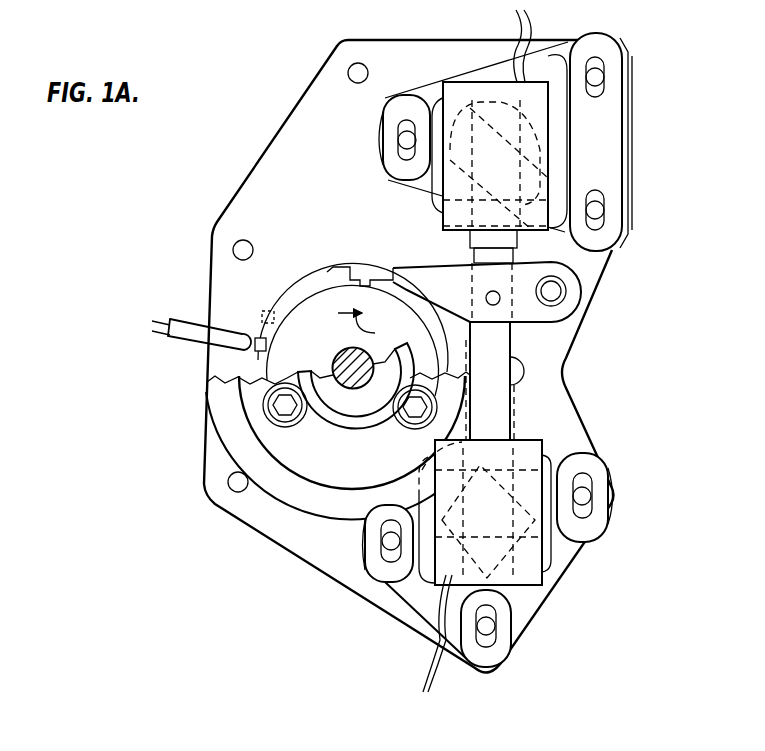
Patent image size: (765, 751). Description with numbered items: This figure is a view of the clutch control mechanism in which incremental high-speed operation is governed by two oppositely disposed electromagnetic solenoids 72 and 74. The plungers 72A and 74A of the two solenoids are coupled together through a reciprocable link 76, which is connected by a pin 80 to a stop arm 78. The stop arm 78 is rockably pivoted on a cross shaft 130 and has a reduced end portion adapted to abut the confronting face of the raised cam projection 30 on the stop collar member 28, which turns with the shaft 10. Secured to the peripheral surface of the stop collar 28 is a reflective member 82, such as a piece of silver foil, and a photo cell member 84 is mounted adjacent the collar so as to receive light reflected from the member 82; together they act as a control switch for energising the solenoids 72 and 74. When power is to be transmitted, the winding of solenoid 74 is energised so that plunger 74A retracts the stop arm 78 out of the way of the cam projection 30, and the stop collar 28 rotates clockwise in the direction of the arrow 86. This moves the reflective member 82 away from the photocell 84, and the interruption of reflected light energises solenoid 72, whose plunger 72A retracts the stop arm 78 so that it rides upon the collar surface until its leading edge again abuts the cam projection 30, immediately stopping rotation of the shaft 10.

The shaft 10 is at (348, 352).
The stop collar member 28 is at (309, 290).
The cam projection 30 is at (341, 278).
The electromagnetic solenoid 72 is at (532, 573).
The plunger 72A is at (507, 530).
The electromagnetic solenoid 74 is at (547, 127).
The plunger 74A is at (516, 163).
The reciprocable link 76 is at (500, 360).
The stop arm 78 is at (460, 297).
The pin 80 is at (500, 281).
The reflective member 82 is at (268, 312).
The photo cell member 84 is at (206, 330).
The arrow 86 is at (367, 331).
The cross shaft 130 is at (550, 298).